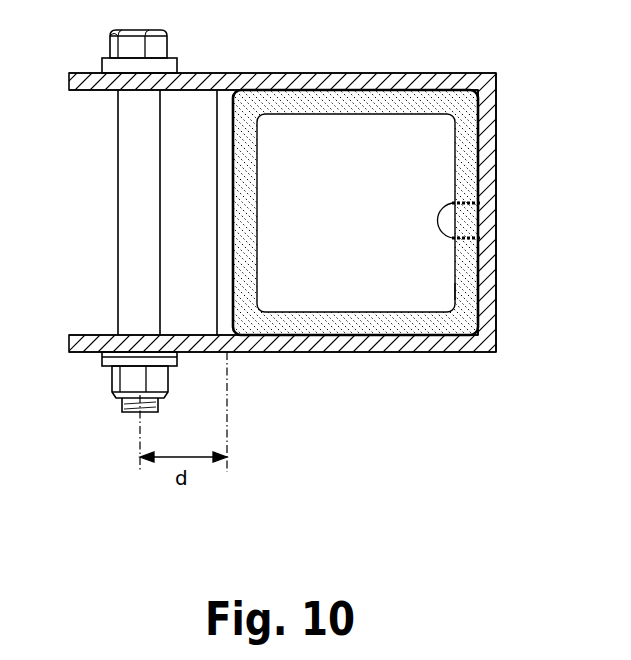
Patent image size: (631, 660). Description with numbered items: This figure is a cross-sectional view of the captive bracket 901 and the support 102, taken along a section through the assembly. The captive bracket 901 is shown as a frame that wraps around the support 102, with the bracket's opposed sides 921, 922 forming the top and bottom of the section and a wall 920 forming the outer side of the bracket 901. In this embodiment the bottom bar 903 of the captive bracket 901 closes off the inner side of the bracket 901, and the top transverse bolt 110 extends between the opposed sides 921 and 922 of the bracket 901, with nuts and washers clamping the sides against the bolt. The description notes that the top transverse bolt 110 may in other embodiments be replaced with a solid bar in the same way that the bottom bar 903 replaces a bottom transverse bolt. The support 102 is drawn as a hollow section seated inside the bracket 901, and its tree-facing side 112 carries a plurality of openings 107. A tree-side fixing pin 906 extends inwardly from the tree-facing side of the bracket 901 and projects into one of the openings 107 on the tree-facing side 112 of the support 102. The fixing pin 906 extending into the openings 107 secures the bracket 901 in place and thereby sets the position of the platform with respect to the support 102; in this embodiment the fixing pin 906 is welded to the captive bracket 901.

The captive bracket 901 is at (496, 74).
The opposed side of the bracket 921 is at (332, 73).
The opposed side of the bracket 922 is at (332, 353).
The side wall of frame 920 is at (497, 140).
The support 102 is at (257, 257).
The tree-facing side of the support 112 is at (455, 283).
The tree-side fixing pin 906 is at (455, 203).
The openings 107 is at (460, 240).
The bottom bar 903 is at (228, 212).
The top transverse bolt 110 is at (136, 183).